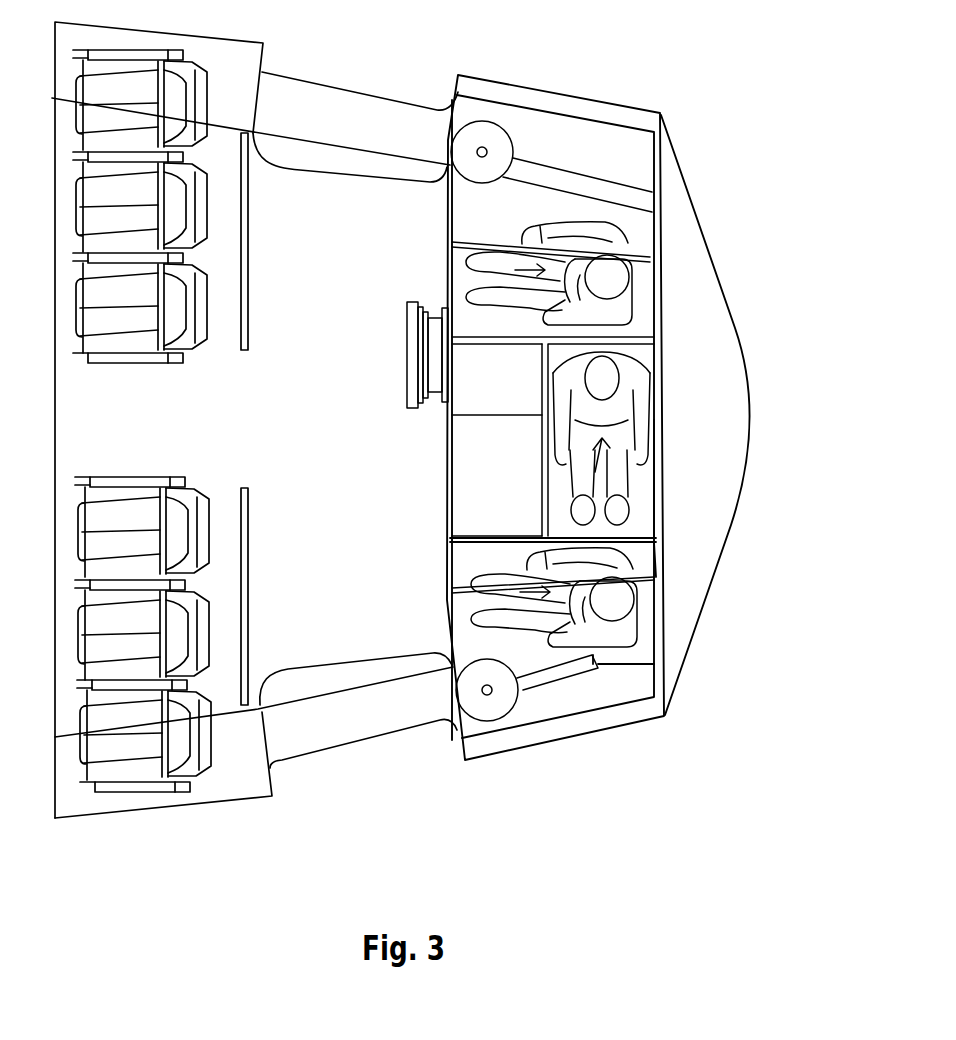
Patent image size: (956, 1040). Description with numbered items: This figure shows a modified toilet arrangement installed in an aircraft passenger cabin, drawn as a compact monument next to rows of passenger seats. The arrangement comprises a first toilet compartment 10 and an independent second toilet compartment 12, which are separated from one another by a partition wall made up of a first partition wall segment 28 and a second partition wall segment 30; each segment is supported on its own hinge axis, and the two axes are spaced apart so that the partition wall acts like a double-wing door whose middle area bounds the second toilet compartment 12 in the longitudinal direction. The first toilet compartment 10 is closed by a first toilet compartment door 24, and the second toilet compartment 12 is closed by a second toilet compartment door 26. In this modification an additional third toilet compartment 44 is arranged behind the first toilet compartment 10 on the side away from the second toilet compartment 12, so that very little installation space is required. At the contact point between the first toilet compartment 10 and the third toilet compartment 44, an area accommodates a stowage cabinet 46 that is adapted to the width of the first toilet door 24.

The first toilet compartment 10 is at (637, 466).
The second toilet compartment 12 is at (583, 673).
The first toilet compartment door 24 is at (540, 468).
The second toilet compartment door 26 is at (452, 588).
The first partition wall segment 28 is at (625, 535).
The second partition wall segment 30 is at (483, 535).
The third toilet compartment 44 is at (609, 243).
The stowage cabinet 46 is at (490, 383).